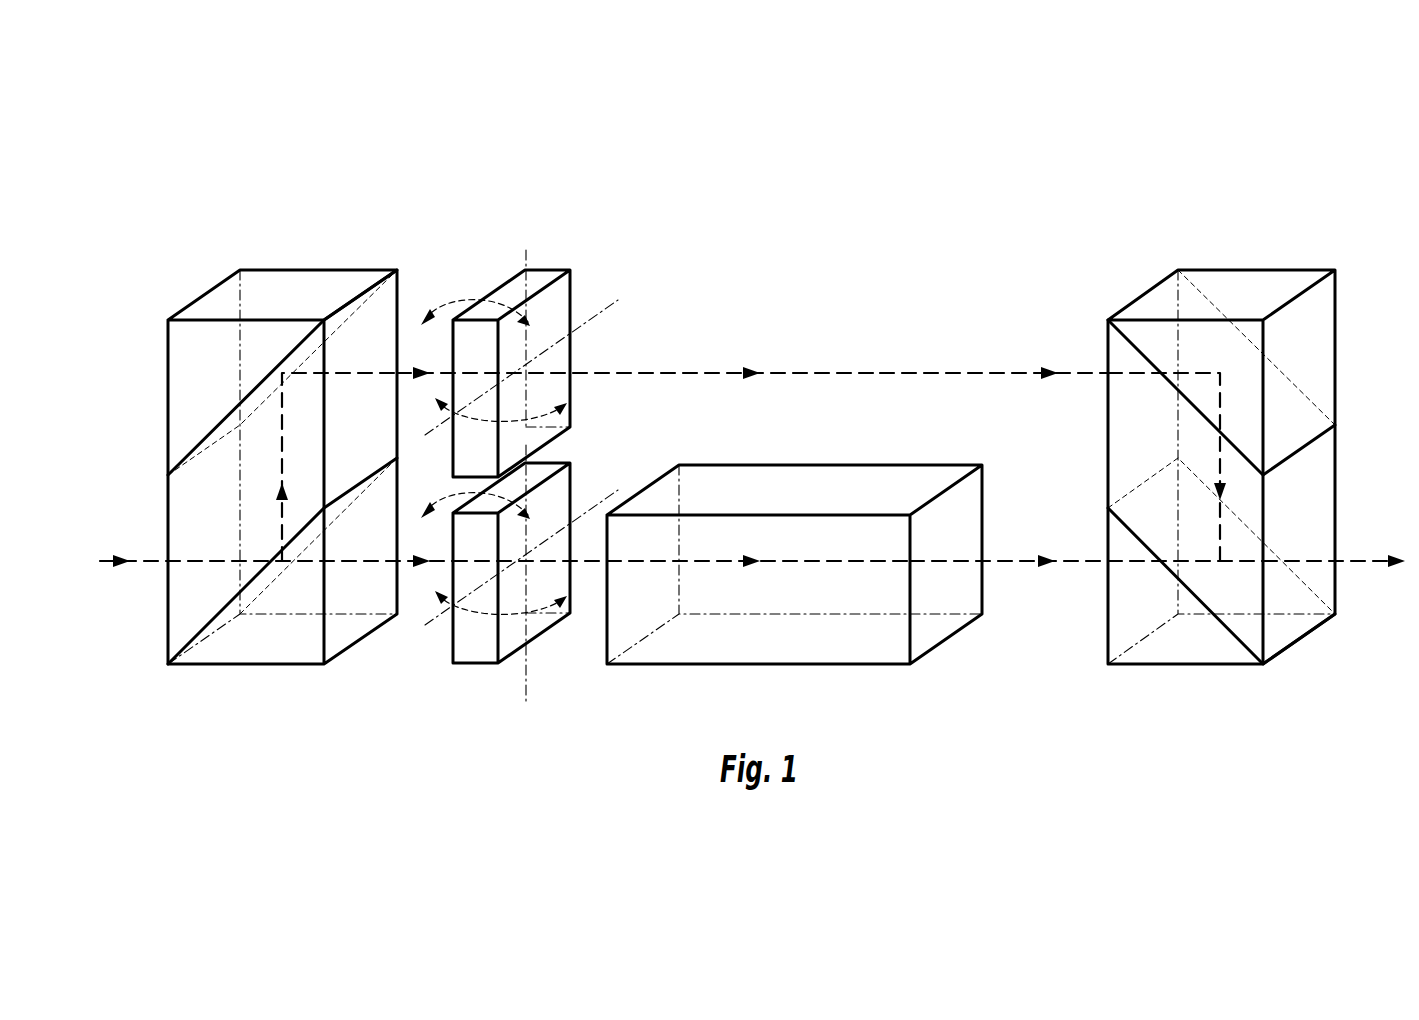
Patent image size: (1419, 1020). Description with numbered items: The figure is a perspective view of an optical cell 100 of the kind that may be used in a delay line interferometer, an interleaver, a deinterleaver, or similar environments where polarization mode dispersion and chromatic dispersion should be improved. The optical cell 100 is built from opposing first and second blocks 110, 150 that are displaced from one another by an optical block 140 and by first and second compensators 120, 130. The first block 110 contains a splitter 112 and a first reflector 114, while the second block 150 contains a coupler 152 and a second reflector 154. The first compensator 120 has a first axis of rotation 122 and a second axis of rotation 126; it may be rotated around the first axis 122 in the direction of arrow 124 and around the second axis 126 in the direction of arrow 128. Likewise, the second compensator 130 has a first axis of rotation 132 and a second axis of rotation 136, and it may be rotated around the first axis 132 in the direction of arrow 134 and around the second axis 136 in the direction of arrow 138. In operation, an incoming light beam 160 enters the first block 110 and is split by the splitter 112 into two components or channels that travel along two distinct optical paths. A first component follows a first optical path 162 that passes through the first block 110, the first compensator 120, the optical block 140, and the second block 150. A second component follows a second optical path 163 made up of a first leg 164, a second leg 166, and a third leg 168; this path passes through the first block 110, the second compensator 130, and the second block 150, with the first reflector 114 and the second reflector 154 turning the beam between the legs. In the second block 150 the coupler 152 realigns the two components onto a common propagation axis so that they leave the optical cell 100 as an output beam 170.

The optical cell 100 is at (382, 180).
The first block 110 is at (300, 269).
The splitter 112 is at (217, 614).
The first reflector 114 is at (198, 445).
The first compensator 120 is at (505, 662).
The first axis of rotation 122 is at (430, 626).
The arrow 124 is at (422, 508).
The second axis of rotation 126 is at (512, 706).
The arrow 128 is at (540, 605).
The second compensator 130 is at (567, 270).
The first axis of rotation 132 is at (618, 300).
The arrow 134 is at (470, 298).
The second axis of rotation 136 is at (515, 262).
The arrow 138 is at (565, 418).
The optical block 140 is at (790, 666).
The second block 150 is at (1237, 269).
The coupler 152 is at (1218, 620).
The second reflector 154 is at (1305, 445).
The light beam 160 is at (153, 560).
The first optical path 162 is at (1018, 563).
The second optical path 163 is at (997, 373).
The first leg 164 is at (282, 447).
The second leg 166 is at (410, 372).
The third leg 168 is at (1222, 417).
The output beam 170 is at (1370, 563).